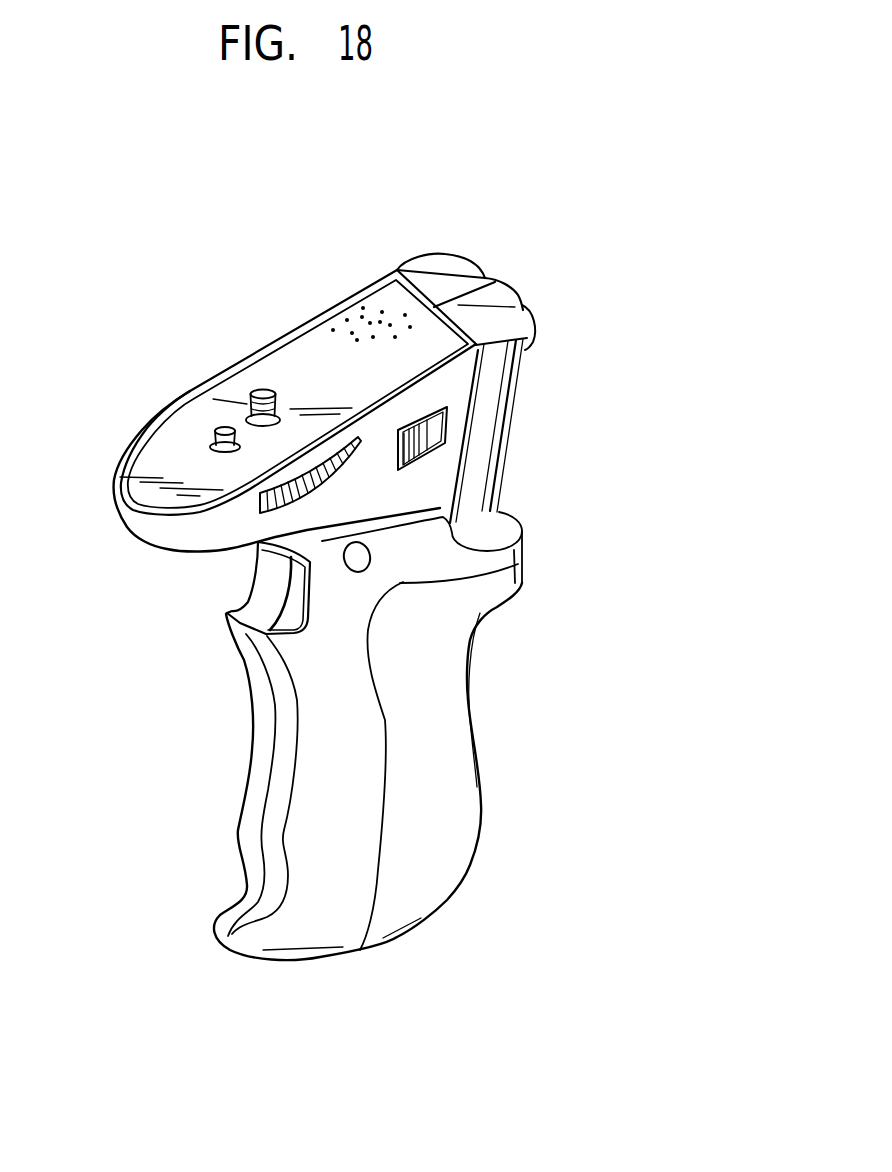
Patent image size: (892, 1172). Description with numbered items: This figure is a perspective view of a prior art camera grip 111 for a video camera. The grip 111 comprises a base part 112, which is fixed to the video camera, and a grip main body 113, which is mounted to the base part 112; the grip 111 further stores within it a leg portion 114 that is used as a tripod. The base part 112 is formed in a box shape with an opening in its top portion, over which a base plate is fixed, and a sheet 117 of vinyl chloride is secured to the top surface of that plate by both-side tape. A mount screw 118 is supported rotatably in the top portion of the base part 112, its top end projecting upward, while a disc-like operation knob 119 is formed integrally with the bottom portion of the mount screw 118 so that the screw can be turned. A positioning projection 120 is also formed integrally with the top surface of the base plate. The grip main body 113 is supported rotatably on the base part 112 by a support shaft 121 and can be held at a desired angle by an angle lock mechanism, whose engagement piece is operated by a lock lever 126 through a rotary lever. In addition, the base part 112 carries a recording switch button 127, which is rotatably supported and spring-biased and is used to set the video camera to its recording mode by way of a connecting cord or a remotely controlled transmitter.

The grip 111 is at (238, 360).
The base part 112 is at (173, 535).
The grip main body 113 is at (435, 868).
The leg portion 114 is at (512, 298).
The sheet 117 is at (363, 308).
The mount screw 118 is at (264, 392).
The operation knob 119 is at (273, 517).
The positioning projection 120 is at (222, 428).
The support shaft 121 is at (367, 562).
The lock lever 126 is at (428, 450).
The recording switch button 127 is at (256, 586).